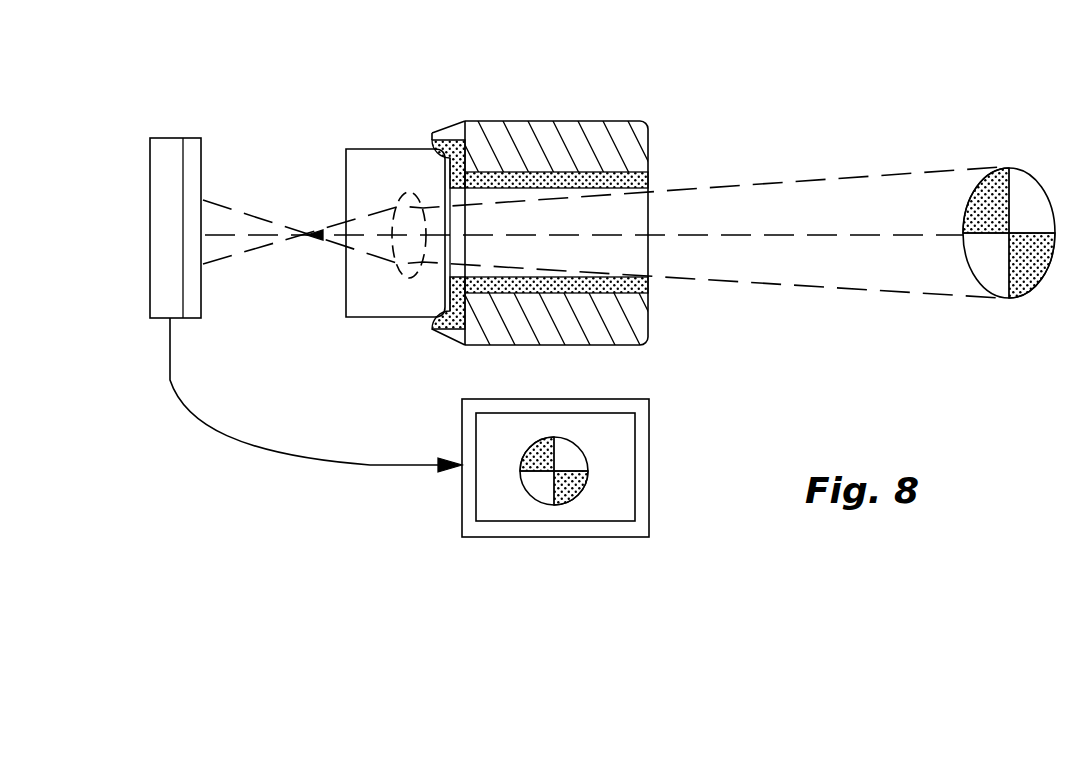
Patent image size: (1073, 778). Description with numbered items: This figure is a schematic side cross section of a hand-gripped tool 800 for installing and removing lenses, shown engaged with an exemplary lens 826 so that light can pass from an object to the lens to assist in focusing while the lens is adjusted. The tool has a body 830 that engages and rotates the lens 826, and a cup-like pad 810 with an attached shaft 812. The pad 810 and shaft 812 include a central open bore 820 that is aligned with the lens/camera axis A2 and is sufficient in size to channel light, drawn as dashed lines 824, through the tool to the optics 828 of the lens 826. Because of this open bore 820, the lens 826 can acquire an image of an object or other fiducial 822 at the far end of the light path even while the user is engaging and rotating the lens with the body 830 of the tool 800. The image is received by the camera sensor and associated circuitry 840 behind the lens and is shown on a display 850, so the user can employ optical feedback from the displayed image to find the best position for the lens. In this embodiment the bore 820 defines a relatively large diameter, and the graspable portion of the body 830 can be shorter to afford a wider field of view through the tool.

The tool 800 is at (565, 212).
The cup-like pad 810 is at (453, 317).
The shaft 812 is at (603, 293).
The central open bore 820 is at (616, 217).
The target 822 is at (1023, 182).
The light 824 is at (842, 175).
The lens 826 is at (403, 157).
The optics 828 is at (397, 195).
The body 830 is at (552, 123).
The camera sensor and associated circuitry 840 is at (160, 297).
The display 850 is at (613, 468).
The lens/camera axis A2 is at (230, 237).